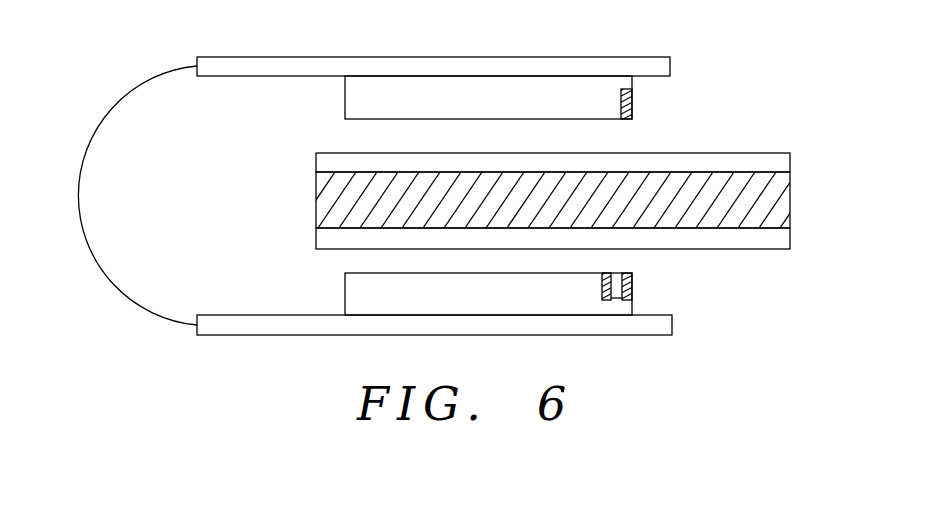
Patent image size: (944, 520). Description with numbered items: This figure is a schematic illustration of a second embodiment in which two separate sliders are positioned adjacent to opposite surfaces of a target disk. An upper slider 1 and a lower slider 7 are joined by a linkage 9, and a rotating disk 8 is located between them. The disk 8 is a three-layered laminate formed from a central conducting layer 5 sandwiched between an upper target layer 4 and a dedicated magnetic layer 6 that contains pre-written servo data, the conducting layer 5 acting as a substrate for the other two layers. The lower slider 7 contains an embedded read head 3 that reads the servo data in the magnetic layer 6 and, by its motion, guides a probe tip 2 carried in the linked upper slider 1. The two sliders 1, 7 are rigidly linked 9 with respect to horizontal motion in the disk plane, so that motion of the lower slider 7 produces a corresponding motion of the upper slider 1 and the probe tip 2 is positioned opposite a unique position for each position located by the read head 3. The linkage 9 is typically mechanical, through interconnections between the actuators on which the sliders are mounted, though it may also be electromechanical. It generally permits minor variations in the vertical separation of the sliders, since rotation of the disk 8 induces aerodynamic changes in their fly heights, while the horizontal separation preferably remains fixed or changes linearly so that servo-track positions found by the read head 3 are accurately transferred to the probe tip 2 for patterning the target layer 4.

The slider 1 is at (345, 90).
The probe tip 2 is at (632, 97).
The read head 3 is at (610, 300).
The upper target layer 4 is at (780, 162).
The central conducting layer 5 is at (785, 198).
The dedicated magnetic layer 6 is at (780, 238).
The lower slider 7 is at (345, 290).
The rotating disk 8 is at (247, 185).
The linkage 9 is at (95, 129).